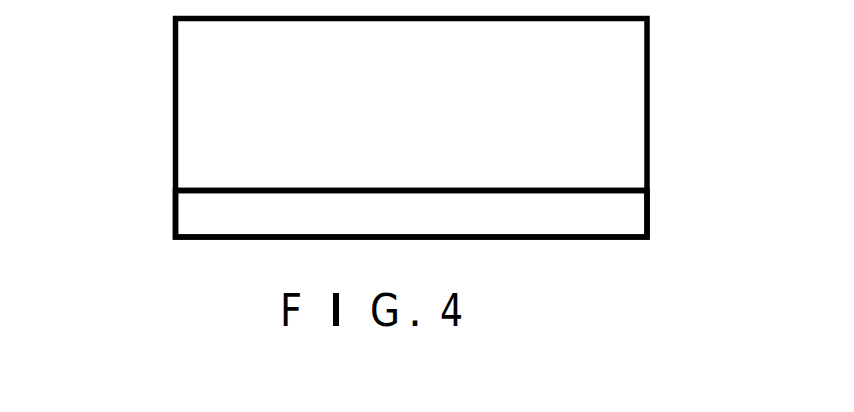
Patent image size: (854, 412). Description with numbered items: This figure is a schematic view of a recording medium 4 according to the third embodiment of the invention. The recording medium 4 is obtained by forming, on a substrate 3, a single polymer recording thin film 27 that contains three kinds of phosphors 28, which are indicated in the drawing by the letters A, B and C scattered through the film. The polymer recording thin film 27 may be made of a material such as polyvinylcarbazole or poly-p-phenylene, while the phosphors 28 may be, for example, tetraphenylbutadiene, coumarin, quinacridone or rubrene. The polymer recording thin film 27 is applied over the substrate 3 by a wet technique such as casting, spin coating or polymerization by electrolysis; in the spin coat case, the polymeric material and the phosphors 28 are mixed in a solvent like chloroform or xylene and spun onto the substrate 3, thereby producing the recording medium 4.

The substrate 3 is at (598, 215).
The recording medium 4 is at (677, 48).
The polymer recording thin film 27 is at (630, 59).
The phosphors 28 is at (267, 135).